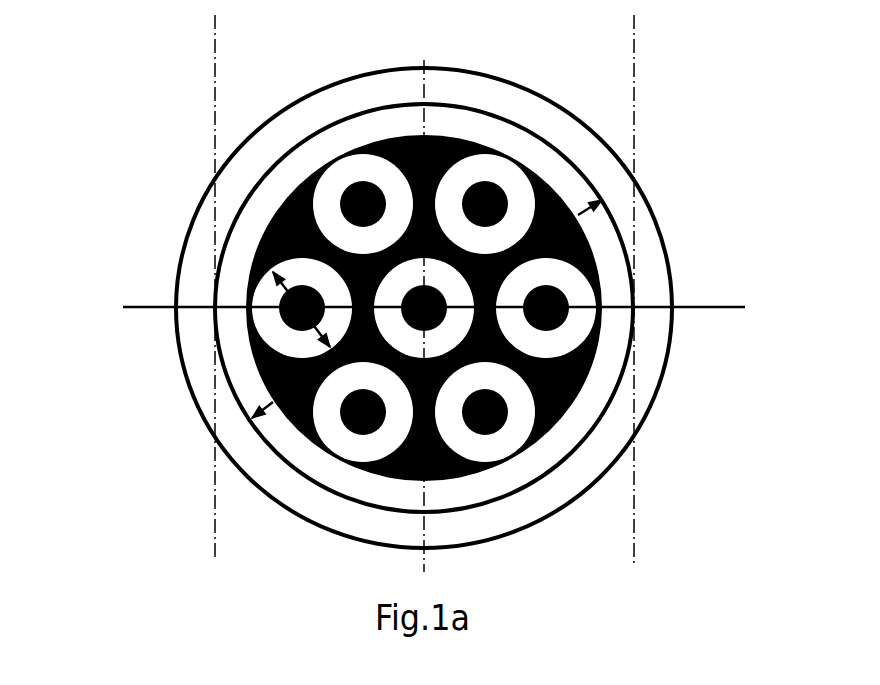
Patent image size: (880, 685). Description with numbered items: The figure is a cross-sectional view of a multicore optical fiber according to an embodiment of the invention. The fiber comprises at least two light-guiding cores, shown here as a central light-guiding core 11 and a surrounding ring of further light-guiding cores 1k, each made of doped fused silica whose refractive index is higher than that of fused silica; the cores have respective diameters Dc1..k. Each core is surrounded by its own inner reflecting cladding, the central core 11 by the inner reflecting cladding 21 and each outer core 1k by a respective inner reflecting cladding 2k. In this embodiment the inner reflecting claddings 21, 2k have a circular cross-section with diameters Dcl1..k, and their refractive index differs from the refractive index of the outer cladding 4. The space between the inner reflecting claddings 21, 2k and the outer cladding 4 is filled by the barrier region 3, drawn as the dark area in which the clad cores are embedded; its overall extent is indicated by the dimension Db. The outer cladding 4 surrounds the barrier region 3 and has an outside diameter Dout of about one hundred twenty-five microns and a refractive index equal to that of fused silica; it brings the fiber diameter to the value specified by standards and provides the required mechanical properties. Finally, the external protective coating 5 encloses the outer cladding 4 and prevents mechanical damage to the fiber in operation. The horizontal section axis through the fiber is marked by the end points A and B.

The light-guiding core 1k is at (366, 180).
The inner reflecting cladding 2k is at (398, 190).
The light-guiding core 11 is at (428, 287).
The inner reflecting cladding 21 is at (467, 293).
The barrier region 3 is at (553, 430).
The outer cladding 4 is at (375, 490).
The external protective coating 5 is at (200, 363).
The core diameter Dc1..k is at (224, 105).
The inner reflecting cladding diameter Dcl1..k is at (198, 248).
The outside diameter of the outer cladding Dout is at (747, 200).
The bundle diameter Db is at (656, 443).
The section axis end A is at (146, 279).
The section axis end B is at (712, 282).